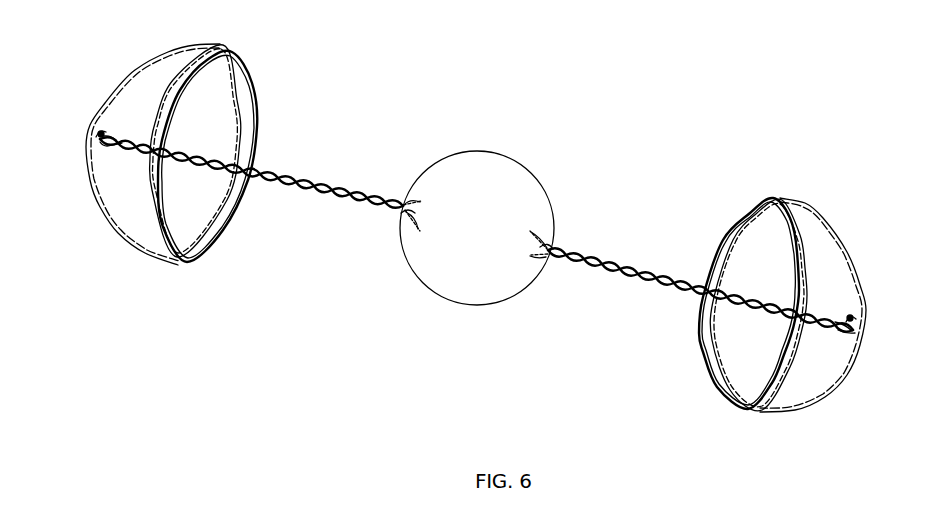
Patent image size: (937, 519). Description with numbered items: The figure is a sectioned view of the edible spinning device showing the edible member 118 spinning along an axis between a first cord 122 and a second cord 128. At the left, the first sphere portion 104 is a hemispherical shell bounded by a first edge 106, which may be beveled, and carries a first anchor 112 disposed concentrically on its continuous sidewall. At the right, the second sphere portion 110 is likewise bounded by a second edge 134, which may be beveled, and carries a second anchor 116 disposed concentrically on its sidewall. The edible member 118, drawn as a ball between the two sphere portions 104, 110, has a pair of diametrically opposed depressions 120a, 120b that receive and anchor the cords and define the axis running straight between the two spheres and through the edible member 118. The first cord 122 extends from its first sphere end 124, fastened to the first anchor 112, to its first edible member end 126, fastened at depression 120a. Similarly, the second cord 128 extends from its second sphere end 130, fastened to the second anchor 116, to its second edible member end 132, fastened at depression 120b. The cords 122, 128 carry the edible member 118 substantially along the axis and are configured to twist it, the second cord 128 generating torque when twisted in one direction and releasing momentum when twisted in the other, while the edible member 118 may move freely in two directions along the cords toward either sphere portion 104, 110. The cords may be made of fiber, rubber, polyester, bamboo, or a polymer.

The first sphere portion 104 is at (113, 217).
The first edge 106 is at (250, 65).
The second sphere portion 110 is at (840, 245).
The first anchor 112 is at (100, 123).
The second anchor 116 is at (855, 330).
The edible member 118 is at (492, 152).
The depression 120a is at (420, 209).
The depression 120b is at (537, 242).
The first cord 122 is at (292, 178).
The first sphere end 124 is at (131, 141).
The first edible member end 126 is at (387, 203).
The second cord 128 is at (650, 268).
The second sphere end 130 is at (823, 320).
The second edible member end 132 is at (573, 246).
The second edge 134 is at (745, 207).